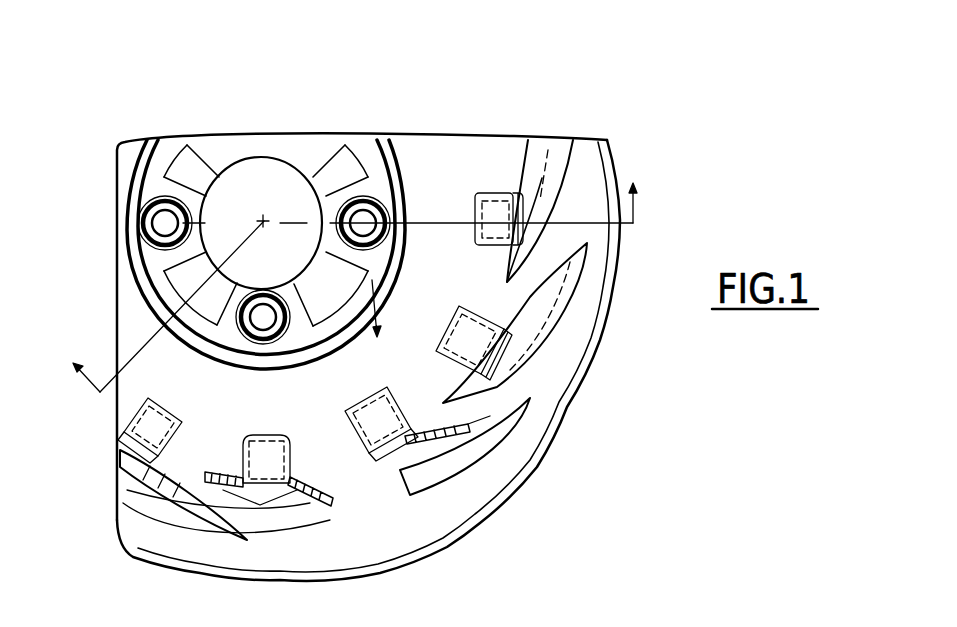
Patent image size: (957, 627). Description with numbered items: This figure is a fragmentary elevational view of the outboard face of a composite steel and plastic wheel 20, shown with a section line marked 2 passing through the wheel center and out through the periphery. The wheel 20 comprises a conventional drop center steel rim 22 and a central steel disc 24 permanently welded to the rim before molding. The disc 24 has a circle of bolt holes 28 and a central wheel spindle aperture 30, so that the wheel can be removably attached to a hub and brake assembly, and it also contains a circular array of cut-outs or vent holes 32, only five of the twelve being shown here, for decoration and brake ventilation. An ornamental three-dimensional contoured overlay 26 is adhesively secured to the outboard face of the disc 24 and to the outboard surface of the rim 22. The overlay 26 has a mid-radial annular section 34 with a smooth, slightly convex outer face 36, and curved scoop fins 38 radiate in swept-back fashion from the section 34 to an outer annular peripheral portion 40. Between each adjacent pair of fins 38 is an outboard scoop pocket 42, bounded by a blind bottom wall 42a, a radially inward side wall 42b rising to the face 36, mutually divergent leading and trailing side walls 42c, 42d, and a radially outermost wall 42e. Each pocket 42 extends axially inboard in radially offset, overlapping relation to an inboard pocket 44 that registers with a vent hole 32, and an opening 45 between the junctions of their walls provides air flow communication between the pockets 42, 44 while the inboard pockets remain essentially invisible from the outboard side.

The section line 2- 2 is at (364, 295).
The wheel 20 is at (619, 152).
The drop center steel rim 22 is at (616, 318).
The central steel disc 24 is at (261, 223).
The ornamental overlay 26 is at (263, 477).
The bolt holes 28 is at (263, 306).
The central wheel spindle aperture 30 is at (207, 205).
The vent holes 32 is at (156, 402).
The mid-radial annular section 34 is at (301, 255).
The outer face 36 is at (325, 357).
The curved scoop fins 38 is at (243, 523).
The outer annular peripheral portion 40 is at (480, 486).
The outboard scoop pockets 42 is at (570, 284).
The bottom wall 42a is at (289, 490).
The radially inward side wall 42b is at (228, 488).
The leading side wall 42c is at (243, 518).
The trailing side wall 42d is at (333, 503).
The radially outermost wall 42e is at (303, 528).
The inboard pockets 44 is at (255, 443).
The opening 45 is at (312, 422).